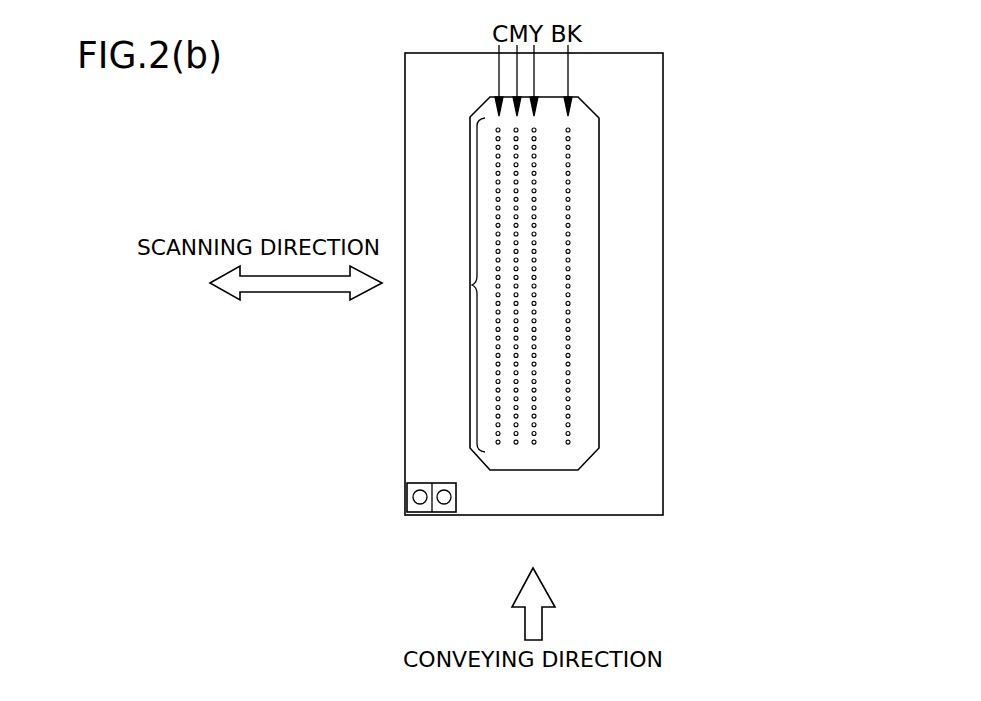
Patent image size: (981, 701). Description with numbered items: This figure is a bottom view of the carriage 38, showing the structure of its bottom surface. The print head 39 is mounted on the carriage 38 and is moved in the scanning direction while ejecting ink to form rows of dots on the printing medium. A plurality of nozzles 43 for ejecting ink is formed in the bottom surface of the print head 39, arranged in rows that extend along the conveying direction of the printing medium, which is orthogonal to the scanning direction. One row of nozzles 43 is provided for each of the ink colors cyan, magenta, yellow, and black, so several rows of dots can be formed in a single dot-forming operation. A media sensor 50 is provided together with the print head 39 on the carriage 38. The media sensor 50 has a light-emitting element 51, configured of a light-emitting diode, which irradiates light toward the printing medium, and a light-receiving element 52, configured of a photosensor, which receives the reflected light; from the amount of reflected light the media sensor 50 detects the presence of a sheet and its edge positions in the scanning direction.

The carriage 38 is at (377, 437).
The print head 39 is at (605, 295).
The nozzles 43 is at (460, 285).
The media sensor 50 is at (402, 536).
The light-emitting element 51 is at (407, 497).
The light-receiving element 52 is at (444, 508).